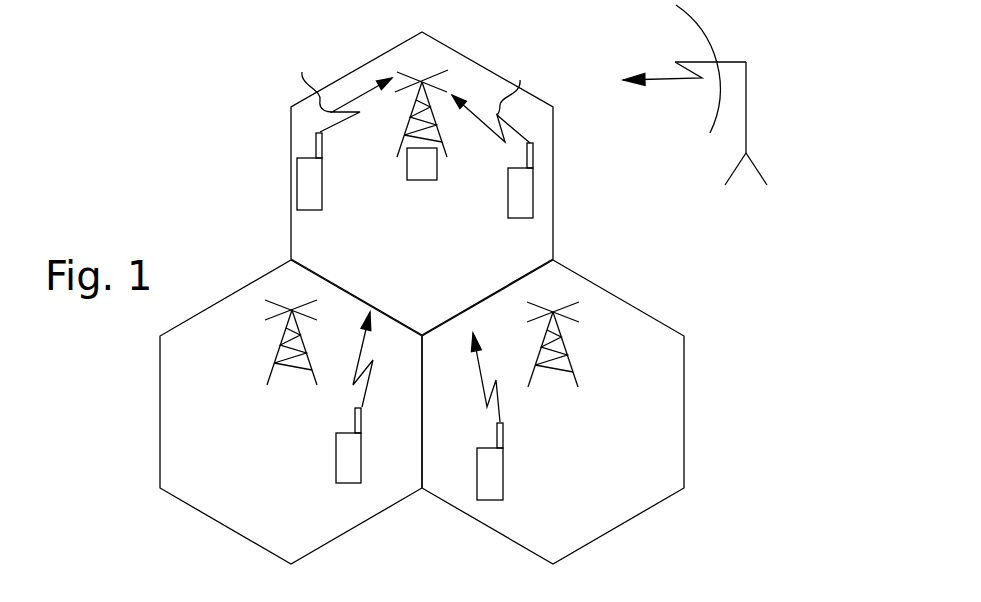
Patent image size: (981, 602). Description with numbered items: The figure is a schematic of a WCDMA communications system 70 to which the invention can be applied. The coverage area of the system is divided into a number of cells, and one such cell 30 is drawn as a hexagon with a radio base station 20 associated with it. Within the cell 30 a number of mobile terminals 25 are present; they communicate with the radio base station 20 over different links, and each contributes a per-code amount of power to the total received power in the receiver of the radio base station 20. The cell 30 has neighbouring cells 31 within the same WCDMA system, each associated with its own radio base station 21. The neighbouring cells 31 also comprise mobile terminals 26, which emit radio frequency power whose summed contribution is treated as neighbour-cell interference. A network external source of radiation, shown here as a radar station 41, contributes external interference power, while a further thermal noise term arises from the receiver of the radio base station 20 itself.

The cellular communication system 70 is at (222, 125).
The radio base station 20 is at (448, 70).
The radio base station of neighbouring cell 21 is at (267, 385).
The mobile terminals 25 is at (297, 185).
The mobile terminals of neighbouring cells 26 is at (336, 470).
The cell 30 is at (291, 238).
The neighbouring cells 31 is at (390, 492).
The radar station 41 is at (746, 110).